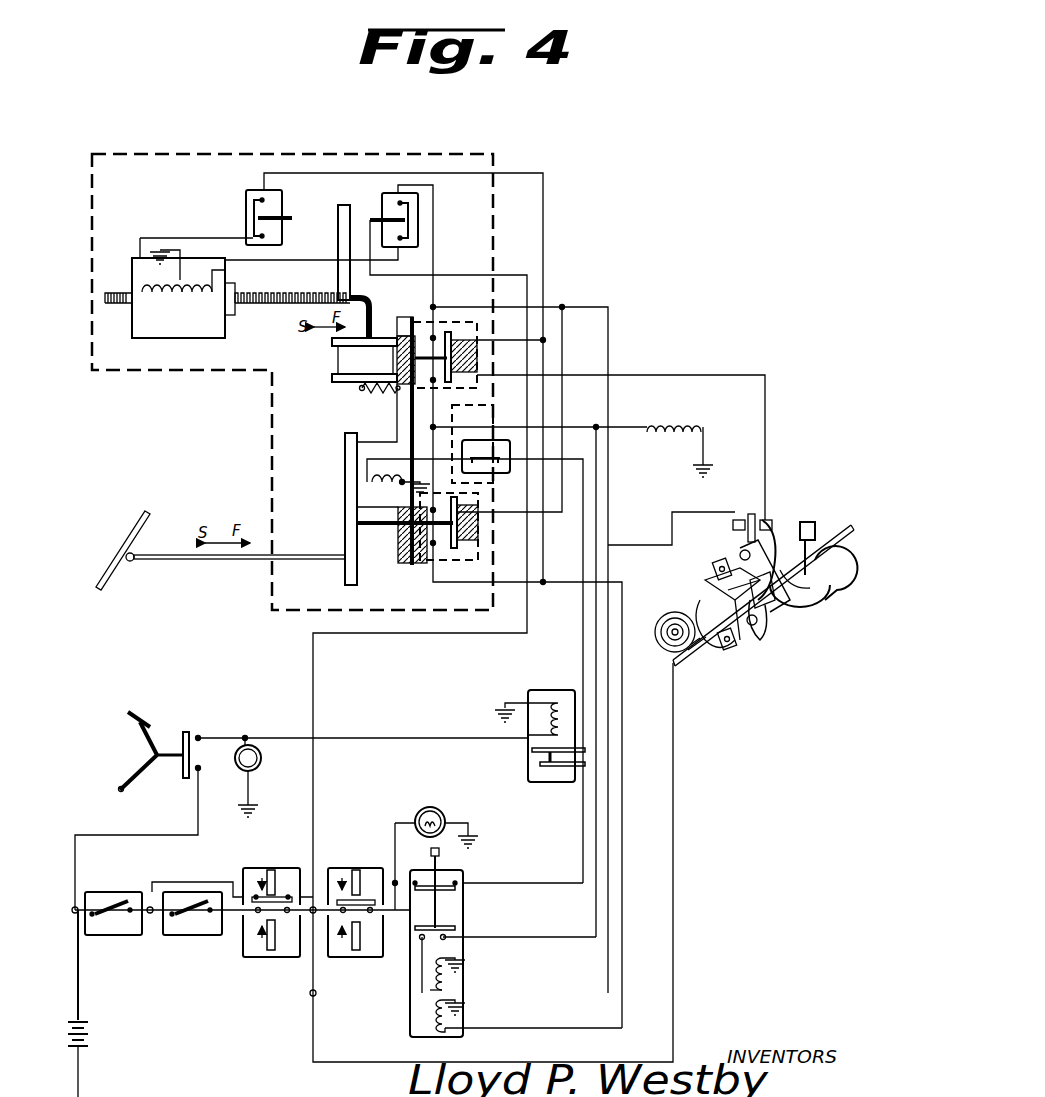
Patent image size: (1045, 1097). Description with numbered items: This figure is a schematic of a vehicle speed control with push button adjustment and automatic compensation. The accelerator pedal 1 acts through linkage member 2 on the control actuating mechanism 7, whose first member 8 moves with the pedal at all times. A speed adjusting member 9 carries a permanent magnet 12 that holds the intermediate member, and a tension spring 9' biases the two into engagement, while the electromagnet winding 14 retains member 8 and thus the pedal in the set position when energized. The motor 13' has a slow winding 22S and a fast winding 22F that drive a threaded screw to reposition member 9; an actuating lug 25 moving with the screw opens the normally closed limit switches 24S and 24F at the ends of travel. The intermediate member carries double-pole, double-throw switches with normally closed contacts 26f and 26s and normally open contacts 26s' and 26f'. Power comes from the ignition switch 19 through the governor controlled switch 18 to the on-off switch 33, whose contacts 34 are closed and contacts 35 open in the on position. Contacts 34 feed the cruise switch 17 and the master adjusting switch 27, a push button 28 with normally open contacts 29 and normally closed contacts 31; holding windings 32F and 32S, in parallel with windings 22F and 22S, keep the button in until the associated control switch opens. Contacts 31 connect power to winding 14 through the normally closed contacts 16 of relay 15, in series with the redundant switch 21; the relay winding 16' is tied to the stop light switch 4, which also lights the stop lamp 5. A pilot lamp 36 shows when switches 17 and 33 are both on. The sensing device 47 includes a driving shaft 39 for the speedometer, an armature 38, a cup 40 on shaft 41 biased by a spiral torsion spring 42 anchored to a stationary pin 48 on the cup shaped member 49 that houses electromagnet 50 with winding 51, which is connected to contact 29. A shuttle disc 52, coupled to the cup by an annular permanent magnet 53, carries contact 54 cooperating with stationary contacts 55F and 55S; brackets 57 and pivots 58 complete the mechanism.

The accelerator pedal 1 is at (126, 520).
The linkage member 2 is at (186, 560).
The stop light switch 4 is at (194, 736).
The stop lamp 5 is at (262, 756).
The control actuating mechanism 7 is at (468, 150).
The first member 8 is at (345, 483).
The speed adjusting member 9 is at (368, 313).
The tension spring 9' is at (371, 441).
The permanent magnet 12 is at (335, 354).
The motor 13' is at (183, 307).
The electromagnet winding 14 is at (398, 482).
The relay 15 is at (532, 752).
The relay contacts 16 is at (540, 776).
The relay winding 16' is at (532, 725).
The cruise on-off switch 17 is at (370, 957).
The governor controlled switch 18 is at (185, 935).
The ignition switch 19 is at (112, 935).
The redundant switch 21 is at (480, 440).
The slow motor winding 22S is at (161, 305).
The fast motor winding 22F is at (182, 347).
The slow limit switch 24S is at (285, 205).
The fast limit switch 24F is at (383, 202).
The actuating lug 25 is at (298, 293).
The normally closed increase-speed contacts 26f is at (422, 334).
The normally open decrease-speed contacts 26s' is at (445, 336).
The normally closed decrease-speed contacts 26s is at (417, 545).
The normally open increase-speed contacts 26f' is at (452, 550).
The master adjusting switch 27 is at (452, 975).
The push button 28 is at (431, 853).
The normally open contacts 29 is at (440, 935).
The normally closed contacts 31 is at (465, 942).
The fast holding winding 32F is at (450, 984).
The slow holding winding 32S is at (450, 1025).
The on-off switch 33 is at (256, 912).
The contacts 34 is at (285, 915).
The contacts 35 is at (278, 895).
The pilot lamp 36 is at (442, 812).
The armature 38 is at (812, 522).
The driving shaft 39 is at (850, 524).
The cup 40 is at (830, 595).
The shaft 41 is at (780, 592).
The spiral torsion spring 42 is at (660, 645).
The sensing device 47 is at (760, 642).
The stationary pin 48 is at (698, 655).
The cup shaped member 49 is at (700, 600).
The electromagnet 50 is at (710, 605).
The electromagnet winding 51 is at (682, 424).
The shuttle disc 52 is at (762, 630).
The annular permanent magnet 53 is at (778, 525).
The contact 54 is at (752, 512).
The stationary fast contact 55F is at (737, 518).
The stationary slow contact 55S is at (768, 518).
The bracket 57 is at (715, 560).
The pivot 58 is at (738, 552).